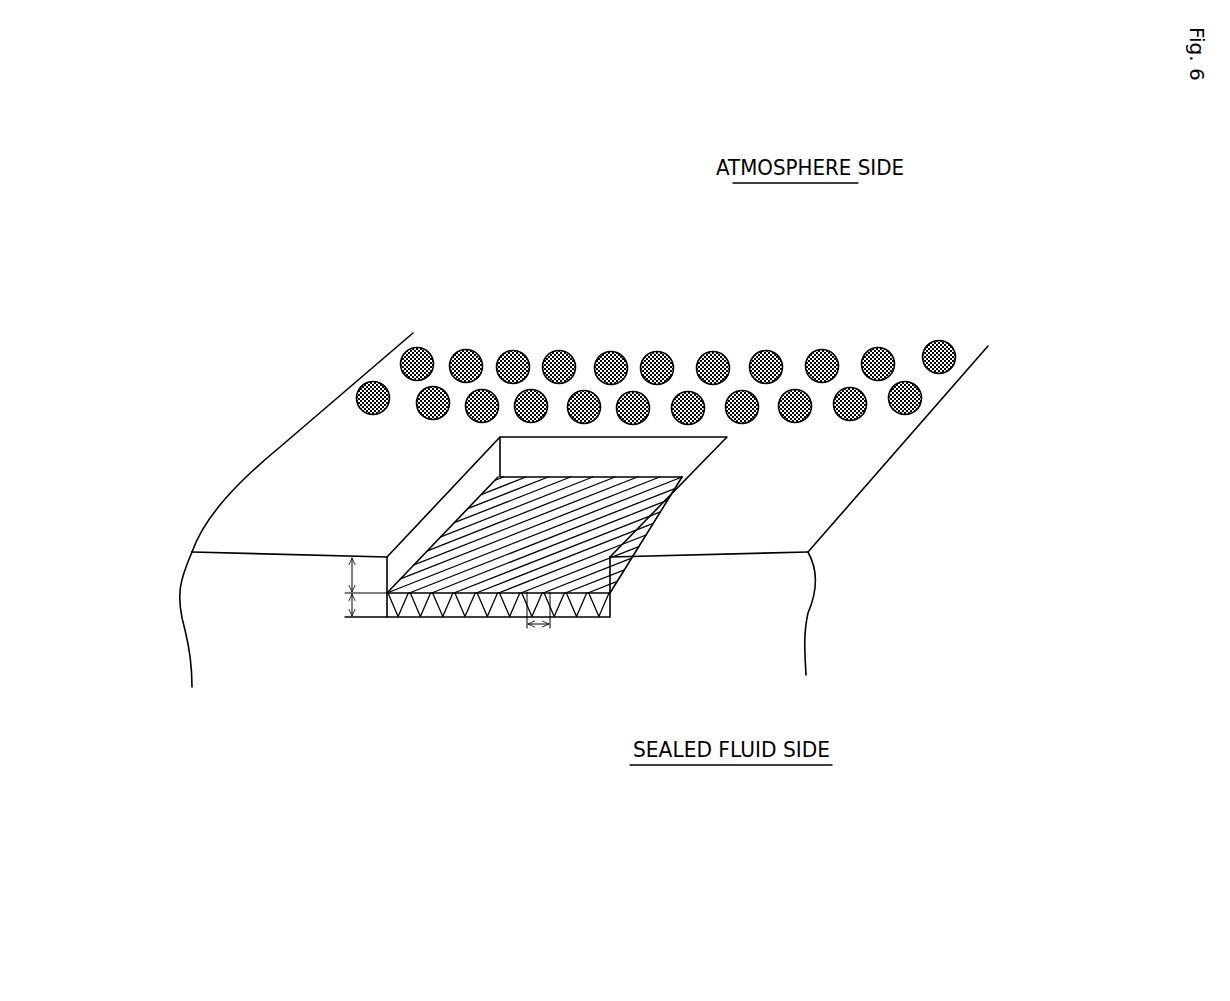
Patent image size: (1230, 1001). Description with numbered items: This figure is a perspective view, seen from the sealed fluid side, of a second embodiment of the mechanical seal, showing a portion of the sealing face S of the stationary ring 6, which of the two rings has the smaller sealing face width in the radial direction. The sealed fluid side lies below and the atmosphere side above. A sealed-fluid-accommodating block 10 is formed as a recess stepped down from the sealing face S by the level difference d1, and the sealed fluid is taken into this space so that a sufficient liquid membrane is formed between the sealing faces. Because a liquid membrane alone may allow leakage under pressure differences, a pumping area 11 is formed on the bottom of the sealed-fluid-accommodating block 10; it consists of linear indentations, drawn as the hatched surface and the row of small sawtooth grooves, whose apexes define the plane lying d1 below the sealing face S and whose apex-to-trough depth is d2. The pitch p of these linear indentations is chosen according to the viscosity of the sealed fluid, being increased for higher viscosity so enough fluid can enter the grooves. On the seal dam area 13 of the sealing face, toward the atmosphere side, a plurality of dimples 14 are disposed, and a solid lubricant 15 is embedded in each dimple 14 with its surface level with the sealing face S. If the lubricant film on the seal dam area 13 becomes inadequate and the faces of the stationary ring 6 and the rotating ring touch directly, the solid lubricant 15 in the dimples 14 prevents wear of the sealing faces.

The stationary ring 6 is at (808, 597).
The sealed-fluid-accommodating block 10 is at (550, 450).
The pumping area 11 is at (600, 517).
The seal dam area 13 is at (388, 370).
The dimple 14 is at (468, 350).
The solid lubricant 15 is at (717, 370).
The sealing face S is at (872, 452).
The level difference d1 is at (348, 575).
The depth of the indentations d2 is at (347, 603).
The pitch of the linear indentations p is at (537, 628).